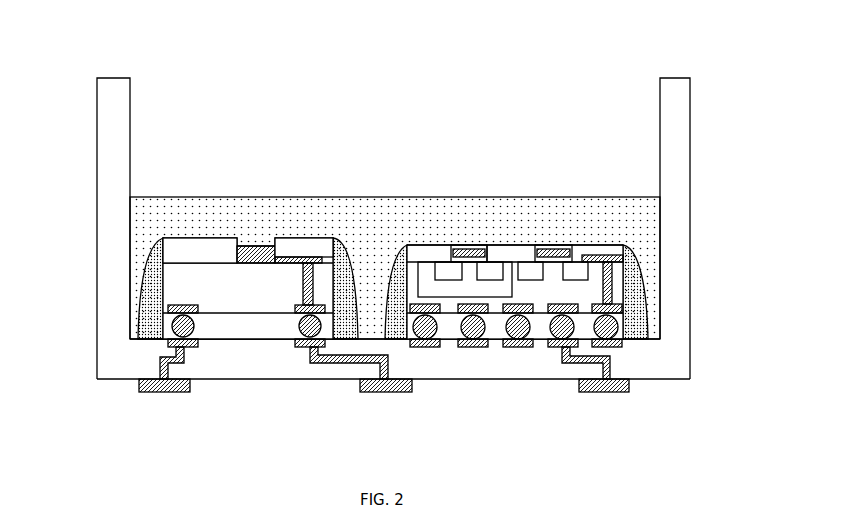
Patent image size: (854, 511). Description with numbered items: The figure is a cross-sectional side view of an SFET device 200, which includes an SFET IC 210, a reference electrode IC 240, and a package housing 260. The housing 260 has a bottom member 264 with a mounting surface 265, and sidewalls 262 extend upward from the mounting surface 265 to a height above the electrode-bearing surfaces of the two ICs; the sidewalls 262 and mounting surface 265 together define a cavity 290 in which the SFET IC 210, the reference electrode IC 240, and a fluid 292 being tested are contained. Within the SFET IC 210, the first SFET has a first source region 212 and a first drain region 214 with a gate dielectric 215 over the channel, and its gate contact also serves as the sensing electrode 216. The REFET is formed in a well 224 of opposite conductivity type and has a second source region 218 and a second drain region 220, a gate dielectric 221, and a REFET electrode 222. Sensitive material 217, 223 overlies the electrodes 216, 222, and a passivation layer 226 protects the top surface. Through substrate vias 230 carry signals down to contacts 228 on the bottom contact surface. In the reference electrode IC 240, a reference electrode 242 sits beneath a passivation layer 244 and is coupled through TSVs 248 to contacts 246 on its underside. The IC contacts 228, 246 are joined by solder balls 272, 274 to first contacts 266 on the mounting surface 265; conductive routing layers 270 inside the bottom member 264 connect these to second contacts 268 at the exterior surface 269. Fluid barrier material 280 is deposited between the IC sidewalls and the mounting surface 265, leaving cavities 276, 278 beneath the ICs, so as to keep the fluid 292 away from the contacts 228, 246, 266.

The SFET device 200 is at (92, 56).
The SFET IC 210 is at (615, 300).
The first source region 212 is at (575, 274).
The first drain region 214 is at (532, 272).
The gate dielectric 215 is at (567, 270).
The sensing electrode 216 is at (552, 256).
The sensitive material 217 is at (542, 247).
The second source region 218 is at (442, 268).
The second drain region 220 is at (493, 270).
The gate dielectric 221 is at (485, 258).
The REFET electrode 222 is at (467, 253).
The sensitive material 223 is at (457, 246).
The well 224 is at (428, 268).
The passivation layer 226 is at (613, 253).
The contacts 228 is at (483, 311).
The through substrate vias 230 is at (613, 280).
The reference electrode IC 240 is at (175, 288).
The reference electrode 242 is at (260, 248).
The passivation layer 244 is at (187, 247).
The contacts 246 is at (300, 318).
The TSVs 248 is at (308, 272).
The package housing 260 is at (130, 105).
The sidewalls 262 is at (105, 162).
The bottom member 264 is at (137, 363).
The mounting surface 265 is at (135, 338).
The first contacts 266 is at (190, 343).
The second contacts 268 is at (607, 392).
The exterior surface 269 is at (667, 380).
The conductive routing layers 270 is at (316, 326).
The solder balls 272 is at (474, 322).
The solder balls 274 is at (311, 344).
The cavity 276 is at (540, 330).
The cavity 278 is at (253, 328).
The fluid barrier material 280 is at (148, 302).
The cavity 290 is at (489, 88).
The fluid 292 is at (210, 210).